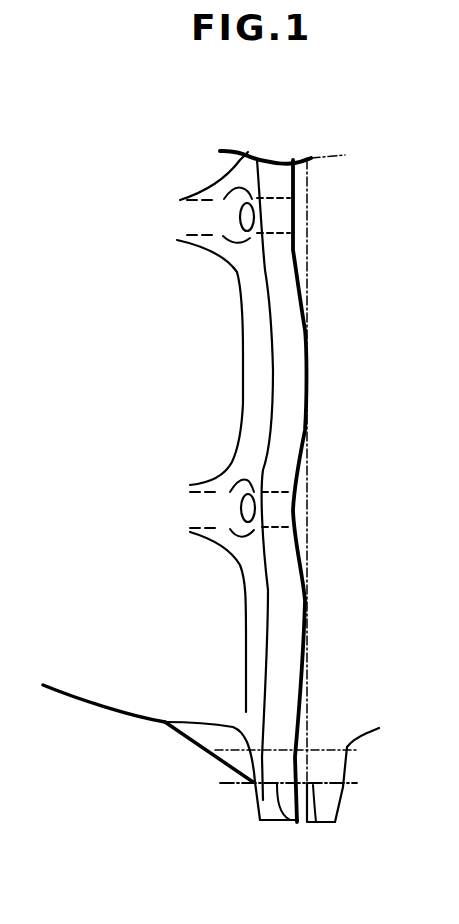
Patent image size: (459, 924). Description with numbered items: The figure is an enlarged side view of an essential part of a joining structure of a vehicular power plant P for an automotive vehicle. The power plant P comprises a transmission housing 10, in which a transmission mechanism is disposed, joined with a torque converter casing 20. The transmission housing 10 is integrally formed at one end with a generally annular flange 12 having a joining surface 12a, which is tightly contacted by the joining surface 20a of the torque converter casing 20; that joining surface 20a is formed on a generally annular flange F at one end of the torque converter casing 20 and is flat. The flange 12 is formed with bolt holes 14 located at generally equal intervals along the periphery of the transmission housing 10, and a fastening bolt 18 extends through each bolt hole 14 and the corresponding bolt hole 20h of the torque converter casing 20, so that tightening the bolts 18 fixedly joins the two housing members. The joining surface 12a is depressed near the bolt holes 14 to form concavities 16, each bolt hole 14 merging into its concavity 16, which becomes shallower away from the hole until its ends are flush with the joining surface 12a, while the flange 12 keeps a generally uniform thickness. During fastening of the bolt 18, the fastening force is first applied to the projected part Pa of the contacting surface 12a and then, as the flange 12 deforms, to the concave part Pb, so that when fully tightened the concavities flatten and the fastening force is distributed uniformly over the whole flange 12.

The transmission housing 10 is at (99, 712).
The flange 12 is at (290, 380).
The joining surface 12a is at (305, 330).
The bolt hole 14 is at (250, 217).
The concavity 16 is at (284, 220).
The fastening bolt 18 is at (357, 785).
The torque converter casing 20 is at (372, 735).
The joining surface 20a is at (308, 553).
The bolt hole 20h is at (333, 785).
The power plant P is at (183, 774).
The projected part Pa is at (305, 355).
The concave part Pb is at (297, 467).
The flange F is at (333, 823).